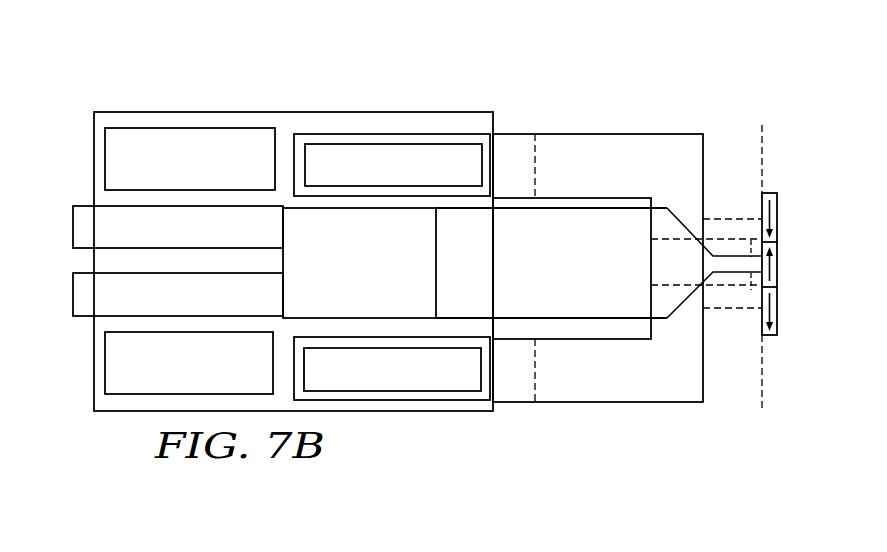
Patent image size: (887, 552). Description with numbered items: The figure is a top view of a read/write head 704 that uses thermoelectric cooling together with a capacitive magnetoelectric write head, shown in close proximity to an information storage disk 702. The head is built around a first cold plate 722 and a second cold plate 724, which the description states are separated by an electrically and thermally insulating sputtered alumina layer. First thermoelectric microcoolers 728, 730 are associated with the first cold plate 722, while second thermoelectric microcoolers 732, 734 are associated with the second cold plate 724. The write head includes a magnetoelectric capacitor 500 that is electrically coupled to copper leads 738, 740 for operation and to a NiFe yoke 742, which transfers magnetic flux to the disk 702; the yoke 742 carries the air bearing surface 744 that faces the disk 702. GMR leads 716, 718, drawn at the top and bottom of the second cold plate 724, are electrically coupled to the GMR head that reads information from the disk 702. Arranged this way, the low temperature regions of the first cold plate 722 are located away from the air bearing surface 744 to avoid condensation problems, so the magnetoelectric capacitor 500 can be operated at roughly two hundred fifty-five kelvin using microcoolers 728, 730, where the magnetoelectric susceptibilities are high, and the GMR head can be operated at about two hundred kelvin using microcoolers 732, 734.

The read/write head 704 is at (149, 58).
The first cold plate 722 is at (297, 112).
The second cold plate 724 is at (600, 381).
The first thermoelectric microcooler 728 is at (105, 157).
The first thermoelectric microcooler 730 is at (105, 362).
The second thermoelectric microcooler 732 is at (394, 144).
The second thermoelectric microcooler 734 is at (393, 391).
The copper lead 738 is at (73, 225).
The copper lead 740 is at (73, 303).
The magnetoelectric capacitor 500 is at (338, 277).
The NiFe yoke 742 is at (592, 293).
The air bearing surface 744 is at (762, 268).
The information storage disk 702 is at (779, 213).
The GMR lead 716 is at (582, 68).
The GMR lead 718 is at (580, 467).